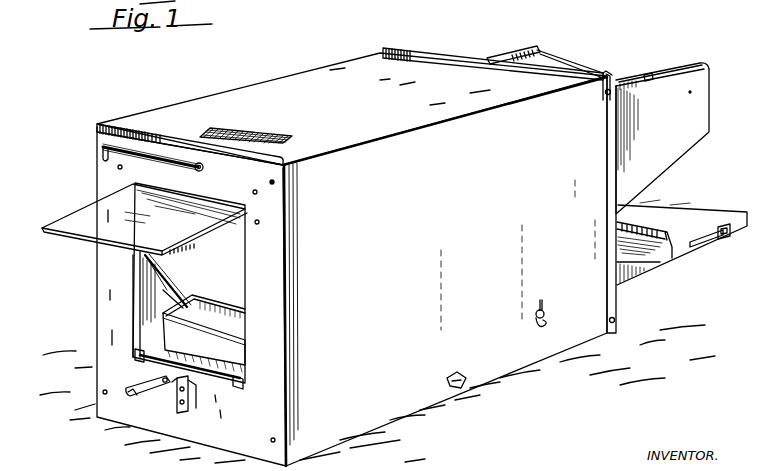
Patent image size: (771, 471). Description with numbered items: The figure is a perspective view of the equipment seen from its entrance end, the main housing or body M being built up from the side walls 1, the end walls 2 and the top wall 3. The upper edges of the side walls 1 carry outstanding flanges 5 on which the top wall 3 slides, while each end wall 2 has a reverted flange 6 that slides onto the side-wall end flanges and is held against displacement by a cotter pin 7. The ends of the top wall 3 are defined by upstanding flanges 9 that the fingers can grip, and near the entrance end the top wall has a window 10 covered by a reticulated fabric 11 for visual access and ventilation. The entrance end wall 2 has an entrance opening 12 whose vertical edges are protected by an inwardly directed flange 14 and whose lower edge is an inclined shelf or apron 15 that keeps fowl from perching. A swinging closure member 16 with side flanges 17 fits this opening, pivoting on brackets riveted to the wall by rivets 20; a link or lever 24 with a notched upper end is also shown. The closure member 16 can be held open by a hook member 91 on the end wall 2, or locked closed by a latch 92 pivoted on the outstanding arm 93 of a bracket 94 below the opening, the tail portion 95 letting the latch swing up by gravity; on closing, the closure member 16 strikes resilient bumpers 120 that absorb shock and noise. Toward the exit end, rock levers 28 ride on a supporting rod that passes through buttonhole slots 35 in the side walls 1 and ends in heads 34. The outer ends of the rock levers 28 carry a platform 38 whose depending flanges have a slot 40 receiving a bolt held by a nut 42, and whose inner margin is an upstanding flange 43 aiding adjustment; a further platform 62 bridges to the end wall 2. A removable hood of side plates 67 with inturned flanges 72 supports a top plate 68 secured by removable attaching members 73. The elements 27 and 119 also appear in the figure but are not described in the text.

The main housing or body M is at (346, 72).
The side walls 1 is at (518, 365).
The end walls 2 is at (272, 262).
The top wall 3 is at (292, 86).
The outstanding flanges 5 is at (590, 73).
The reverted flange 6 is at (605, 192).
The cotter pin 7 is at (603, 96).
The upstanding flanges 9 is at (158, 130).
The opening or window 10 is at (275, 133).
The reticulated fabric 11 is at (215, 130).
The entrance opening 12 is at (256, 272).
The inwardly directed flange 14 is at (137, 290).
The shelf or apron 15 is at (246, 371).
The closure member 16 is at (75, 216).
The inwardly disposed flange 17 is at (193, 254).
The rivets 20 is at (117, 168).
The link or lever 24 is at (152, 314).
The tray 27 is at (242, 345).
The rock levers 28 is at (654, 264).
The heads 34 is at (538, 330).
The buttonhole slots 35 is at (540, 300).
The platform 38 is at (712, 212).
The slot 40 is at (698, 248).
The nut 42 is at (731, 232).
The upstanding flange 43 is at (647, 230).
The platform 62 is at (615, 244).
The side plate 67 is at (537, 56).
The top plate 68 is at (632, 76).
The inturned flanges 72 is at (512, 46).
The removable attaching members 73 is at (650, 74).
The hook member 91 is at (164, 170).
The latch 92 is at (163, 377).
The outstanding arm 93 is at (176, 392).
The bracket 94 is at (193, 398).
The tail portion 95 is at (135, 396).
The end block 119 is at (134, 355).
The resilient bumpers 120 is at (245, 388).